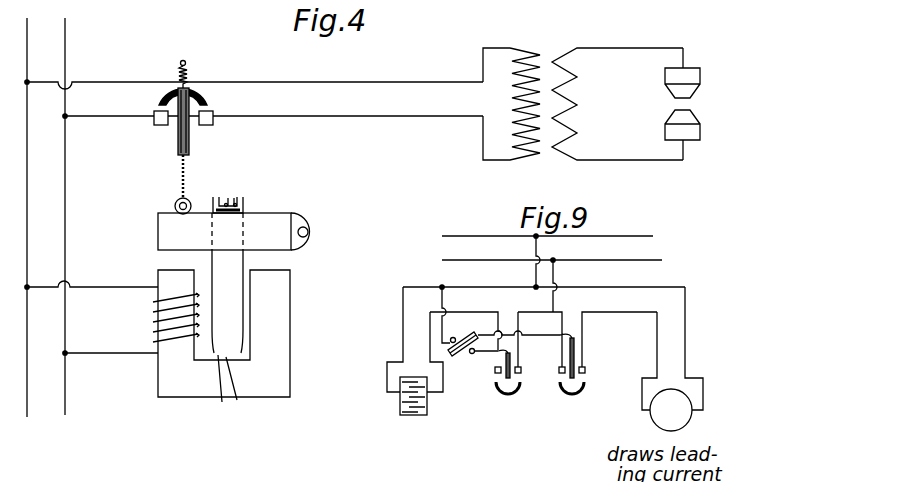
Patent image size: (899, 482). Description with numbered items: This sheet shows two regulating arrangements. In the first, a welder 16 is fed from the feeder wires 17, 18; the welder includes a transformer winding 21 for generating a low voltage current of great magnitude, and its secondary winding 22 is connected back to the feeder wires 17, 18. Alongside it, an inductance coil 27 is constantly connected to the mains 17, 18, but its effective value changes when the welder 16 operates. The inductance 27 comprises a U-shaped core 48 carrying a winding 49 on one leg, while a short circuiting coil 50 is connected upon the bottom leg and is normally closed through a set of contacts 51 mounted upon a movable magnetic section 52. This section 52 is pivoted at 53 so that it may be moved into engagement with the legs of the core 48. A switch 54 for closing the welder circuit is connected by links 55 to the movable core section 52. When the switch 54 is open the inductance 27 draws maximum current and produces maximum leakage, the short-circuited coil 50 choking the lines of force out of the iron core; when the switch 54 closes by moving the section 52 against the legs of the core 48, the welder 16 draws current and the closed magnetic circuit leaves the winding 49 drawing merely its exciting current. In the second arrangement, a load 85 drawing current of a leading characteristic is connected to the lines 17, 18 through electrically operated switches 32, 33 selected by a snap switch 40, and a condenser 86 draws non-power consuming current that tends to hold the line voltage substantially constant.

In FIG. 4, the welder 16 is at (695, 104).
In FIG. 4, the feeder wire 17 is at (27, 212).
In FIG. 9, the feeder wire 17 is at (650, 237).
In FIG. 4, the feeder wire 18 is at (65, 170).
In FIG. 9, the feeder wire 18 is at (659, 263).
In FIG. 4, the transformer winding 21 is at (583, 101).
In FIG. 4, the secondary winding 22 is at (506, 101).
In FIG. 4, the inductance coil 27 is at (171, 283).
In FIG. 4, the U-shaped core 48 is at (162, 381).
In FIG. 4, the winding 49 is at (157, 316).
In FIG. 4, the short circuiting coil 50 is at (225, 400).
In FIG. 4, the contacts 51 is at (228, 198).
In FIG. 4, the movable magnetic section 52 is at (268, 216).
In FIG. 4, the pivot 53 is at (317, 220).
In FIG. 4, the switch 54 is at (204, 98).
In FIG. 4, the links 55 is at (177, 178).
In FIG. 9, the snap switch 40 is at (462, 361).
In FIG. 9, the condenser 86 is at (398, 419).
In FIG. 9, the electrically operated switch 33 is at (502, 392).
In FIG. 9, the electrically operated switch 32 is at (571, 392).
In FIG. 9, the load 85 is at (652, 416).